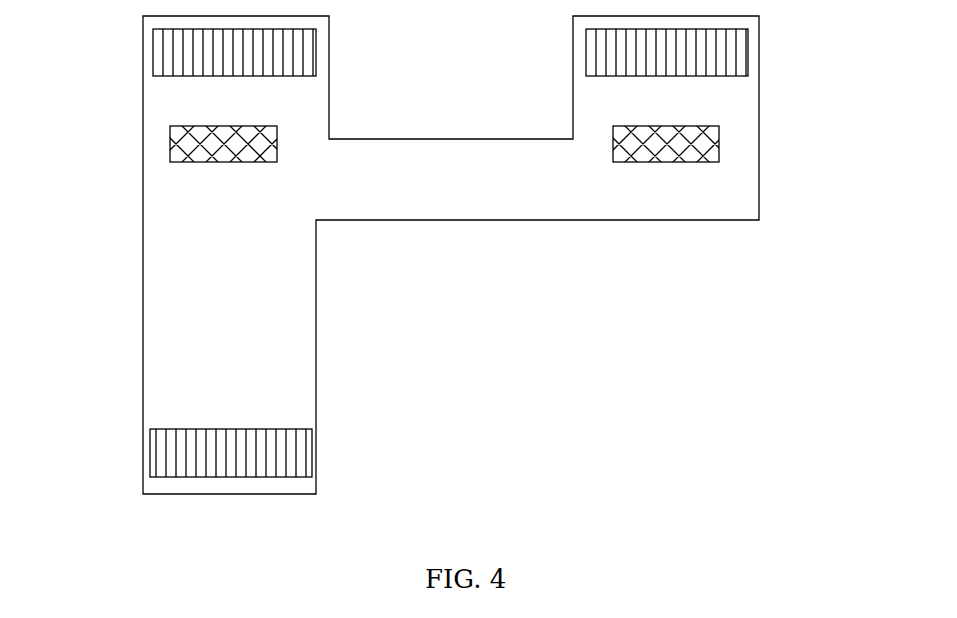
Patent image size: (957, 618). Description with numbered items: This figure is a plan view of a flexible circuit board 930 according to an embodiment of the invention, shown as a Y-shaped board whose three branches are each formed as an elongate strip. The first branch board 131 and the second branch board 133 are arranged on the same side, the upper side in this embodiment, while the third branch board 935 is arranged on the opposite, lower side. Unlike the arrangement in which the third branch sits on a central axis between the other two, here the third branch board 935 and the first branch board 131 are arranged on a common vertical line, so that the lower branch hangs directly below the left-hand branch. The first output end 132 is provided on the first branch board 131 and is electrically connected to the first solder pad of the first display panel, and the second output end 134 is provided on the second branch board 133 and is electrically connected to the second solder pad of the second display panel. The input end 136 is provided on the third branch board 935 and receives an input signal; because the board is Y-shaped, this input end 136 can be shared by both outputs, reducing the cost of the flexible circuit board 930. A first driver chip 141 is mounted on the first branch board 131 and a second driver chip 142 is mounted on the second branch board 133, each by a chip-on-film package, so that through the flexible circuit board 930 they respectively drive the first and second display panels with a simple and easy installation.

The flexible circuit board 930 is at (753, 125).
The first branch board 131 is at (157, 115).
The first output end 132 is at (183, 53).
The second branch board 133 is at (753, 195).
The second output end 134 is at (731, 62).
The third branch board 935 is at (293, 358).
The input end 136 is at (278, 463).
The first driver chip 141 is at (240, 153).
The second driver chip 142 is at (710, 147).